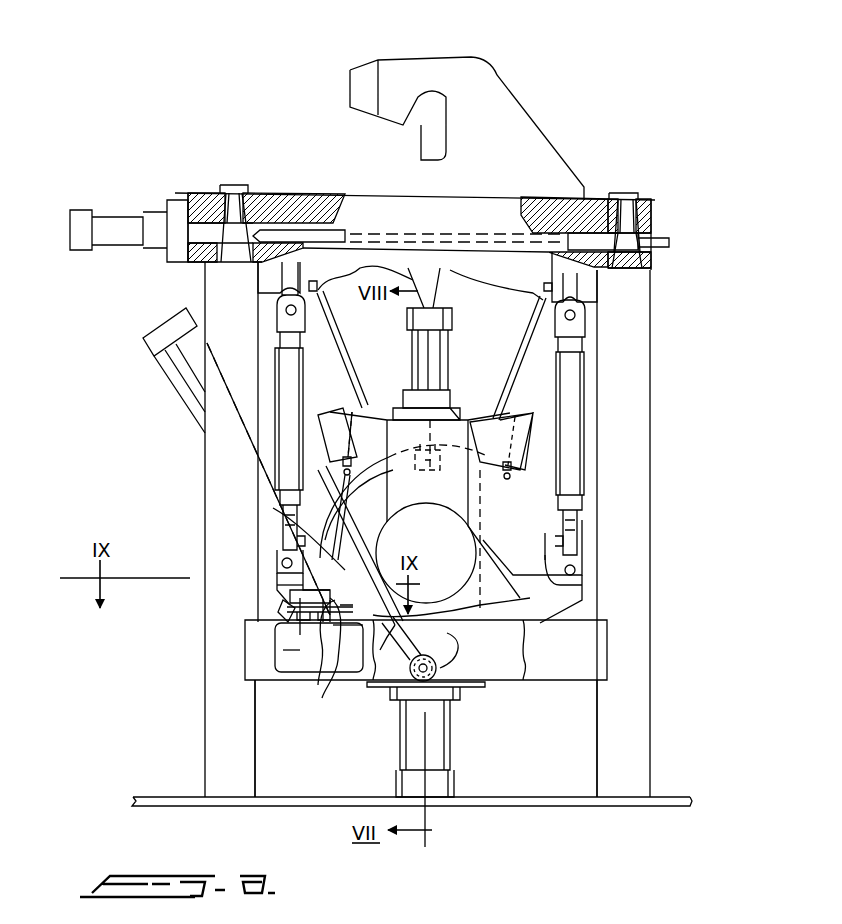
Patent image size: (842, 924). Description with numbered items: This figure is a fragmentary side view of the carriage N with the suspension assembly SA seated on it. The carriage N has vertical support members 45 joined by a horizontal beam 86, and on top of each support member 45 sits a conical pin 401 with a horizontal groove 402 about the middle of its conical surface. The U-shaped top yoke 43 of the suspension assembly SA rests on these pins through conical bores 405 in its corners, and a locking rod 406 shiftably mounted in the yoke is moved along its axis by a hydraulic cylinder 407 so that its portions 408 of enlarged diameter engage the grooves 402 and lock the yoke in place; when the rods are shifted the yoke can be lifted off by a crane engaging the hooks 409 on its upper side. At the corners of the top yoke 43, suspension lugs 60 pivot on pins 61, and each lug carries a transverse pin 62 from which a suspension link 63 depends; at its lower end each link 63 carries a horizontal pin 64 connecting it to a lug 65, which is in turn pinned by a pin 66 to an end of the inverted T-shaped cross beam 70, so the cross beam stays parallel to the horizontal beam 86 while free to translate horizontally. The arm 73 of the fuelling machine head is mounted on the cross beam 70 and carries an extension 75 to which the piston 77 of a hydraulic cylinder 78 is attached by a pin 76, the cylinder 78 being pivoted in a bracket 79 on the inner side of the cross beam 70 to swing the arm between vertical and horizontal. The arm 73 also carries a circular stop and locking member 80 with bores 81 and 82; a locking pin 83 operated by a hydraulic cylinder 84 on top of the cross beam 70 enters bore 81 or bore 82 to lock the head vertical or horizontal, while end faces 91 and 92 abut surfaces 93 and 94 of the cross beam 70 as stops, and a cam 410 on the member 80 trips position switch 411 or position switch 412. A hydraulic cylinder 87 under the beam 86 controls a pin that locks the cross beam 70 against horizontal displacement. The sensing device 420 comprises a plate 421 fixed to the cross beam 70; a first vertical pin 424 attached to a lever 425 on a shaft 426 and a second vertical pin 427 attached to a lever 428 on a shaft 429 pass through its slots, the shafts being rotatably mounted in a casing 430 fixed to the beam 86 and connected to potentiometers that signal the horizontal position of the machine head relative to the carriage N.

The hook 409 is at (397, 57).
The suspension assembly SA is at (213, 168).
The conical bore 405 is at (236, 192).
The conical pin 401 is at (226, 218).
The hydraulic cylinder 407 is at (108, 222).
The top yoke 43 is at (446, 208).
The enlarged-diameter portion 408 is at (582, 240).
The locking rod 406 is at (343, 236).
The groove 402 is at (670, 240).
The pin 61 is at (317, 286).
The suspension lug 60 is at (288, 278).
The pin 62 is at (287, 311).
The hydraulic cylinder 84 is at (441, 352).
The locking pin 83 is at (461, 405).
The arm 73 is at (506, 366).
The suspension link 63 is at (298, 388).
The position switch 411 is at (353, 418).
The position switch 412 is at (528, 460).
The hydraulic cylinder 78 is at (190, 388).
The vertical support member 45 is at (212, 462).
The stop and locking member 80 is at (350, 497).
The bore 81 is at (410, 490).
The end face 91 is at (449, 493).
The cam 410 is at (390, 516).
The bracket 79 is at (273, 508).
The horizontal pin 64 is at (303, 537).
The lug 65 is at (288, 542).
The pin 66 is at (283, 563).
The piston 77 is at (352, 545).
The bore 82 is at (426, 553).
The surface 93 is at (533, 578).
The surface 94 is at (287, 585).
The plate 421 is at (310, 587).
The second vertical pin 427 is at (282, 613).
The first vertical pin 424 is at (484, 612).
The sensing device 420 is at (293, 622).
The extension 75 is at (448, 635).
The lever 428 is at (287, 621).
The cross beam 70 is at (543, 618).
The lever 425 is at (346, 642).
The casing 430 is at (283, 651).
The pin 76 is at (436, 666).
The horizontal beam 86 is at (550, 674).
The end face 92 is at (318, 660).
The shaft 429 is at (295, 623).
The shaft 426 is at (322, 698).
The carriage N is at (187, 713).
The hydraulic cylinder 87 is at (433, 753).